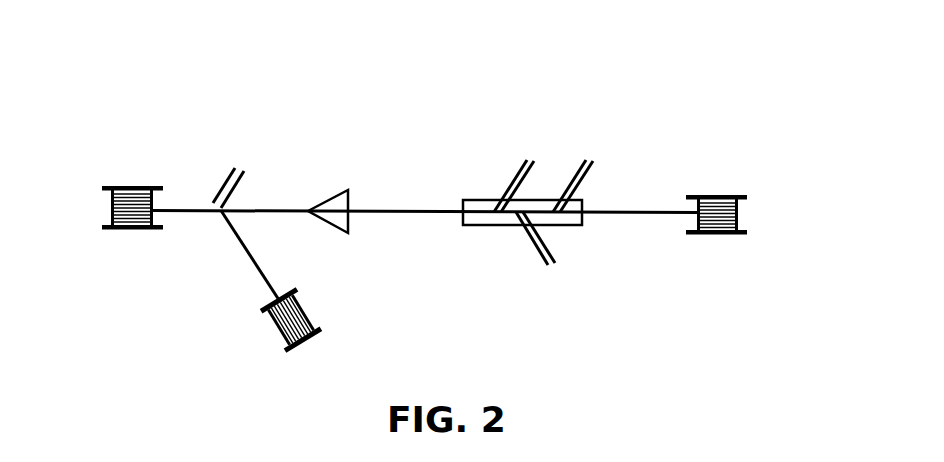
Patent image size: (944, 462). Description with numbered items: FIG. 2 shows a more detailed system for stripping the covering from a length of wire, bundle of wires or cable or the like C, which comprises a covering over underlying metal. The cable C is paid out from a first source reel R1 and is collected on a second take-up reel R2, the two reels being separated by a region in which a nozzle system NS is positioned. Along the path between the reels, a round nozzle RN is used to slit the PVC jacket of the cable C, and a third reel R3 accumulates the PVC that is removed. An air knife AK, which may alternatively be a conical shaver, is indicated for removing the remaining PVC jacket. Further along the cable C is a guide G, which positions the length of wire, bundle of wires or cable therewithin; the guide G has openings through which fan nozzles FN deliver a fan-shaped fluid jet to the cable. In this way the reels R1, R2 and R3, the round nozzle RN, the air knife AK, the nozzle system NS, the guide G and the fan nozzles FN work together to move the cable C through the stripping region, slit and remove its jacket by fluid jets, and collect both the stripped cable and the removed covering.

The first source reel R1 is at (127, 176).
The second take-up reel R2 is at (733, 185).
The third reel R3 is at (260, 339).
The round nozzle RN is at (254, 156).
The air knife AK is at (354, 244).
The length of wire, bundle of wires or cable C is at (396, 203).
The fan nozzle FN is at (532, 147).
The nozzle system NS is at (630, 161).
The guide G is at (581, 234).